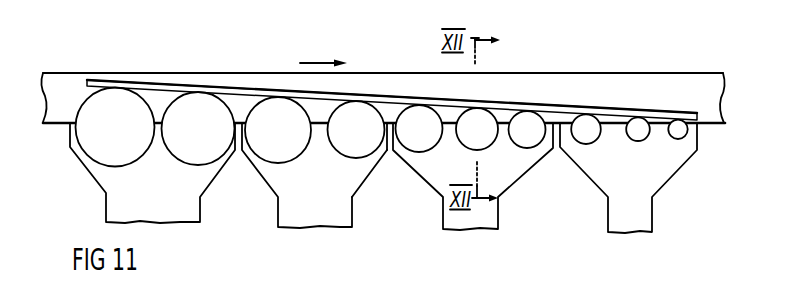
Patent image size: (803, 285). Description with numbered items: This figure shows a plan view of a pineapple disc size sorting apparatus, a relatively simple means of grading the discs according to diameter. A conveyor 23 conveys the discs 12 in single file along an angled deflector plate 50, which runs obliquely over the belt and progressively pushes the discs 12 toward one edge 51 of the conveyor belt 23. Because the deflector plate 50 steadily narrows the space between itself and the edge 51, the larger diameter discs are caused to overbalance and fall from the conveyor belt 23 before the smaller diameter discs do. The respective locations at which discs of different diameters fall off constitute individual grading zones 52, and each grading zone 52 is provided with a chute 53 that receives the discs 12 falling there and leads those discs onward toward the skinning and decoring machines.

The discs 12 is at (208, 133).
The conveyor 23 is at (63, 86).
The angled deflector plate 50 is at (237, 90).
The edge 51 is at (60, 126).
The grading zones 52 is at (151, 176).
The chute 53 is at (368, 177).